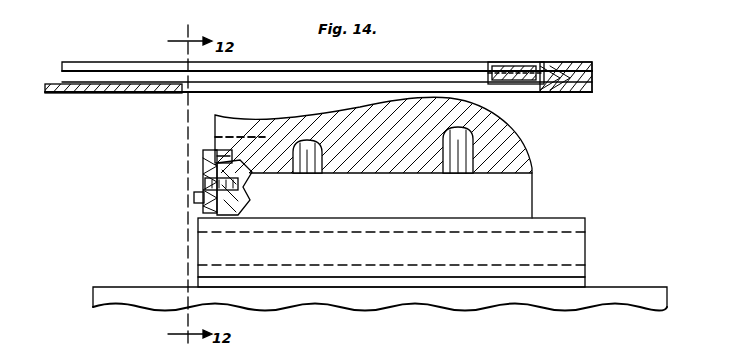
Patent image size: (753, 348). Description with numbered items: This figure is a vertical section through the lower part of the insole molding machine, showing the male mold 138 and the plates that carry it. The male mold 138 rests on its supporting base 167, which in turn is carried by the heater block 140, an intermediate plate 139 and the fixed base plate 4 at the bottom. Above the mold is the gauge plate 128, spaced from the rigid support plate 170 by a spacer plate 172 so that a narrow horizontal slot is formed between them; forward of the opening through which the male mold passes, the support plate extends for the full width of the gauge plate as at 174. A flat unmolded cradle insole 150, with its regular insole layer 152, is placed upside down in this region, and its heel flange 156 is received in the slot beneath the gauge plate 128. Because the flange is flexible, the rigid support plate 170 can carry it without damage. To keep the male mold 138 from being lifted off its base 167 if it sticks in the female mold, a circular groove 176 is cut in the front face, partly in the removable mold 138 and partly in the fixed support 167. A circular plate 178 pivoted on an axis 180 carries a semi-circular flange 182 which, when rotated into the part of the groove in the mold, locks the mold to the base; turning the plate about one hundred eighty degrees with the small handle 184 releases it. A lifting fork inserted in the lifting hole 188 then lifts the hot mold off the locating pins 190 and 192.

The fixed base plate 4 is at (655, 295).
The gauge plate 128 is at (78, 64).
The male mold 138 is at (510, 138).
The intermediate plate 139 is at (570, 282).
The heater block 140 is at (570, 250).
The cradle insole 150 is at (500, 65).
The regular insole 152 is at (518, 62).
The flange 156 is at (557, 62).
The supporting base 167 is at (510, 192).
The support plate 170 is at (283, 88).
The spacer plate 172 is at (110, 78).
The full-width portion of support plate 174 is at (63, 94).
The circular groove 176 is at (237, 158).
The circular plate 178 is at (203, 171).
The axis 180 is at (204, 184).
The semi-circular flange 182 is at (215, 152).
The handle 184 is at (196, 203).
The lifting hole 188 is at (224, 140).
The locating pin 190 is at (456, 170).
The locating pin 192 is at (306, 168).